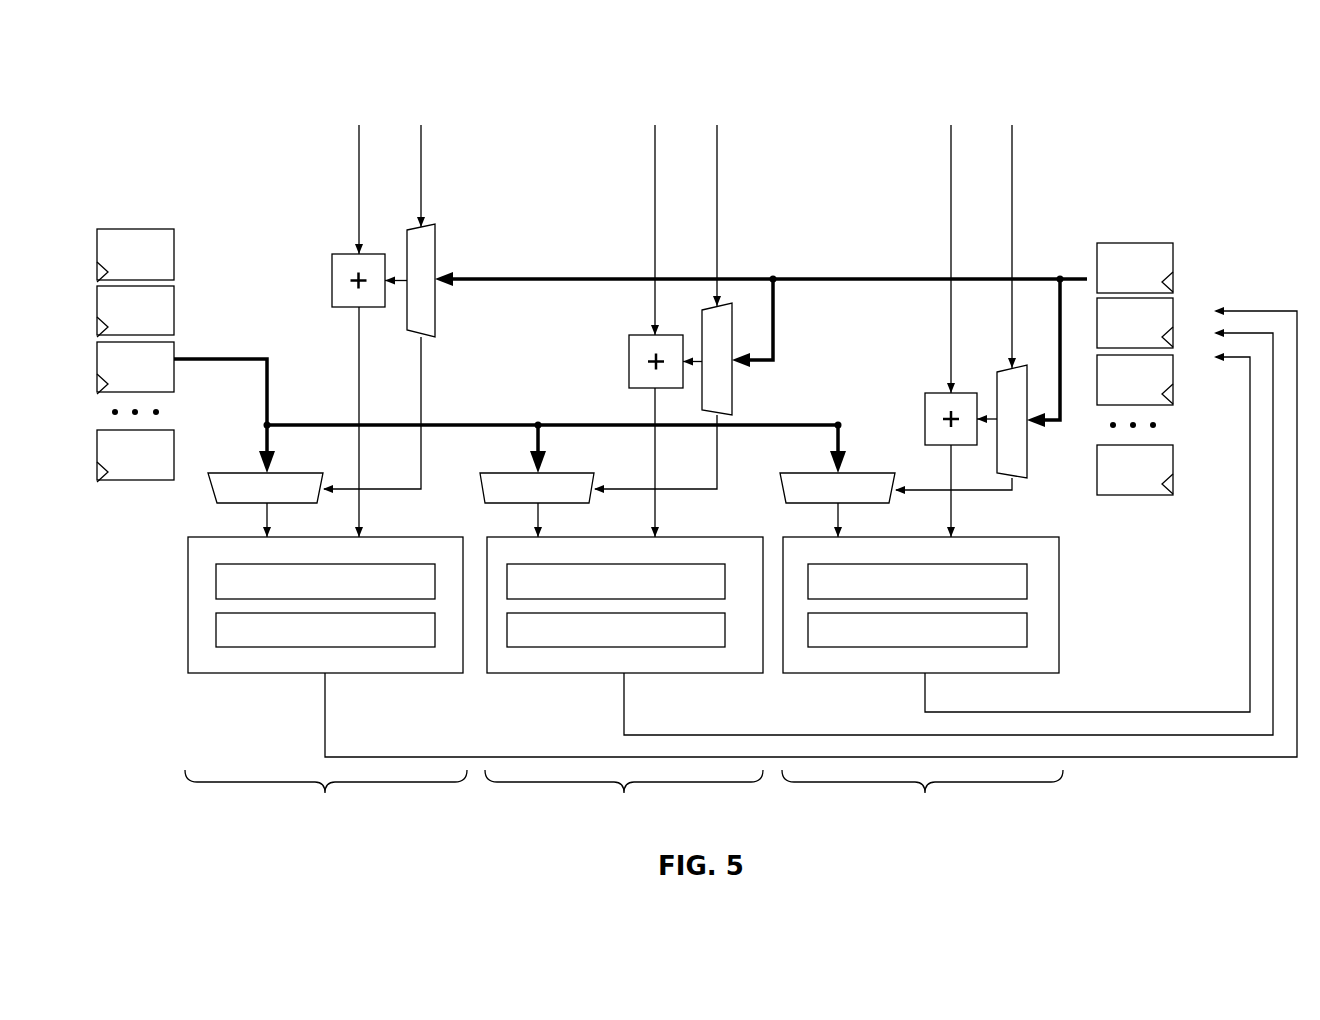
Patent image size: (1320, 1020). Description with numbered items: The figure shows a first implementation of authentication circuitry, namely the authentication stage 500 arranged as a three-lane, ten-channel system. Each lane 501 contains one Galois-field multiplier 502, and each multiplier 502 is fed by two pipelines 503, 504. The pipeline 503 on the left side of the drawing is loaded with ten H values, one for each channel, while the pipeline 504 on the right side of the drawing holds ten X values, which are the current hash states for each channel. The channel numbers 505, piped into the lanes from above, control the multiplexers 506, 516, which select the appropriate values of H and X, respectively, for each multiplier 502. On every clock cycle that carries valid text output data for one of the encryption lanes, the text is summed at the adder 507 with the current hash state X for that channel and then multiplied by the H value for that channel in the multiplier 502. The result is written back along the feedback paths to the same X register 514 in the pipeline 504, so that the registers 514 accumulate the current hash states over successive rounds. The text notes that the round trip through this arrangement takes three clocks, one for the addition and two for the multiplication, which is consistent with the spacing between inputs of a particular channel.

The authentication stage 500 is at (697, 437).
The lane 501 is at (624, 799).
The Galois-field multiplier 502 is at (397, 673).
The pipeline 503 is at (156, 206).
The pipeline 504 is at (1176, 342).
The channel number 505 is at (421, 158).
The multiplexer 506 is at (435, 302).
The adder 507 is at (332, 284).
The X register 514 is at (1173, 315).
The multiplexer 516 is at (285, 473).